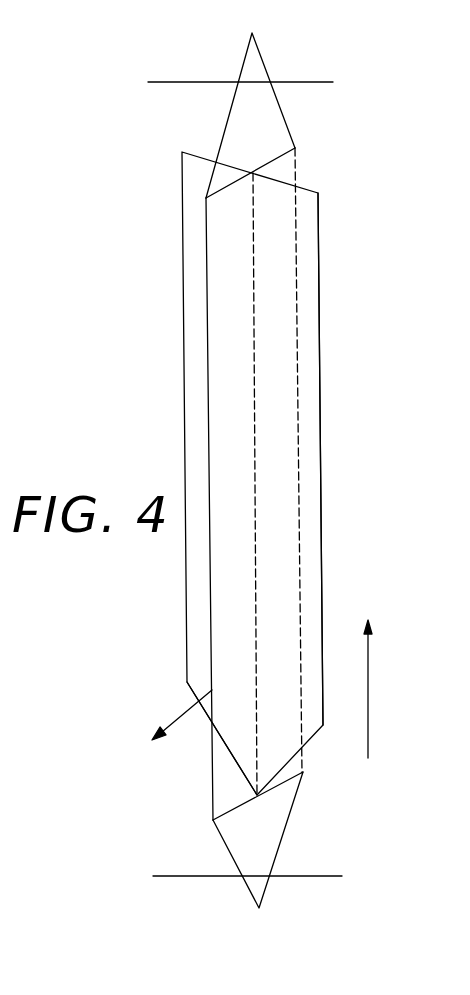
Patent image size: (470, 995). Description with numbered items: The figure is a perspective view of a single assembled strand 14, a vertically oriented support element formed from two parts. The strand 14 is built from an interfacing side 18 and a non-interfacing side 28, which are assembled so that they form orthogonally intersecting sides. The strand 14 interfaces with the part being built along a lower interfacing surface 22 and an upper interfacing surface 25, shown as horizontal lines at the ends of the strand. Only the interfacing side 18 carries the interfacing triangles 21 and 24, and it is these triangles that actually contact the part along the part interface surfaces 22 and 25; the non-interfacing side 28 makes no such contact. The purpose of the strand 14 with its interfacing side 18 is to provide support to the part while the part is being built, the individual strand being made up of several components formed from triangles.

The strand 14 is at (373, 166).
The interfacing side 18 is at (207, 250).
The interfacing triangle 21 is at (268, 127).
The lower interfacing surface 22 is at (195, 82).
The interfacing triangle 24 is at (273, 820).
The upper interfacing surface 25 is at (206, 877).
The non-interfacing side 28 is at (320, 310).